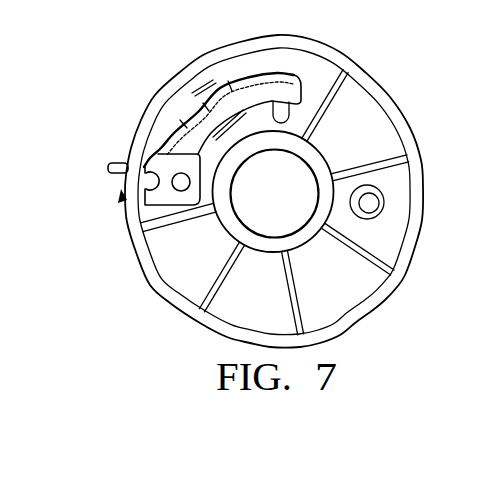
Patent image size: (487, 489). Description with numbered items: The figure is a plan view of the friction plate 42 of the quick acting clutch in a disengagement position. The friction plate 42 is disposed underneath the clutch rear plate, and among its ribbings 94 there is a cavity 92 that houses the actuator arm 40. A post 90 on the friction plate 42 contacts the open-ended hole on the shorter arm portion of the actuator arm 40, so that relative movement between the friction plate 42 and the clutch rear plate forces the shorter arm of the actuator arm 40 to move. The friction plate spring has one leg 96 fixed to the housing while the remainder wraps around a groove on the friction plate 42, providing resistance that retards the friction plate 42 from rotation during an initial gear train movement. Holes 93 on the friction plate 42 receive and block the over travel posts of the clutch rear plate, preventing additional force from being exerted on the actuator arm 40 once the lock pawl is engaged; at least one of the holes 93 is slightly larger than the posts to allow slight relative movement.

The actuator arm 40 is at (173, 212).
The friction plate 42 is at (185, 305).
The post 90 is at (146, 186).
The cavity 92 is at (200, 100).
The holes 93 is at (372, 203).
The ribbings 94 is at (180, 107).
The leg 96 is at (110, 164).